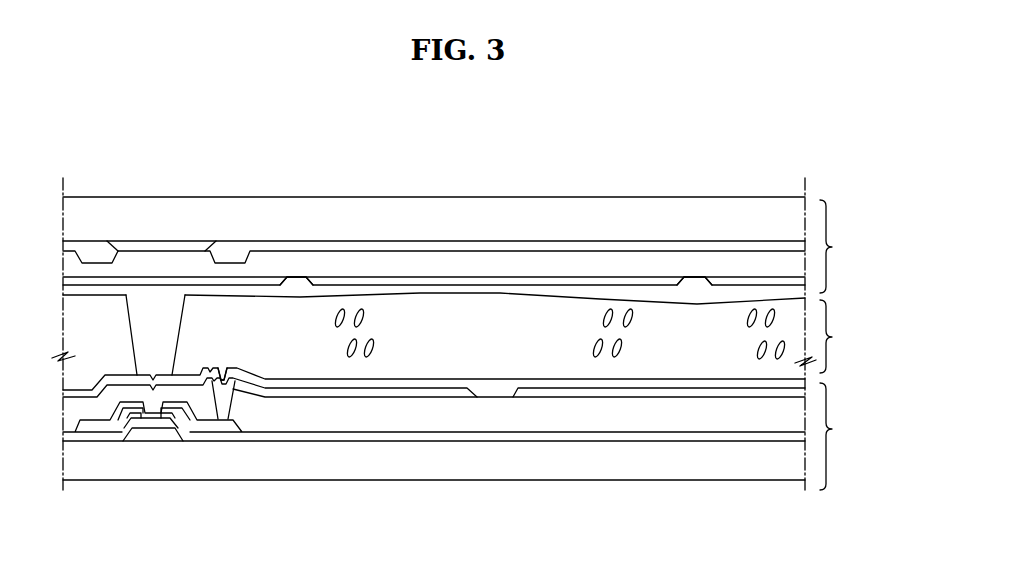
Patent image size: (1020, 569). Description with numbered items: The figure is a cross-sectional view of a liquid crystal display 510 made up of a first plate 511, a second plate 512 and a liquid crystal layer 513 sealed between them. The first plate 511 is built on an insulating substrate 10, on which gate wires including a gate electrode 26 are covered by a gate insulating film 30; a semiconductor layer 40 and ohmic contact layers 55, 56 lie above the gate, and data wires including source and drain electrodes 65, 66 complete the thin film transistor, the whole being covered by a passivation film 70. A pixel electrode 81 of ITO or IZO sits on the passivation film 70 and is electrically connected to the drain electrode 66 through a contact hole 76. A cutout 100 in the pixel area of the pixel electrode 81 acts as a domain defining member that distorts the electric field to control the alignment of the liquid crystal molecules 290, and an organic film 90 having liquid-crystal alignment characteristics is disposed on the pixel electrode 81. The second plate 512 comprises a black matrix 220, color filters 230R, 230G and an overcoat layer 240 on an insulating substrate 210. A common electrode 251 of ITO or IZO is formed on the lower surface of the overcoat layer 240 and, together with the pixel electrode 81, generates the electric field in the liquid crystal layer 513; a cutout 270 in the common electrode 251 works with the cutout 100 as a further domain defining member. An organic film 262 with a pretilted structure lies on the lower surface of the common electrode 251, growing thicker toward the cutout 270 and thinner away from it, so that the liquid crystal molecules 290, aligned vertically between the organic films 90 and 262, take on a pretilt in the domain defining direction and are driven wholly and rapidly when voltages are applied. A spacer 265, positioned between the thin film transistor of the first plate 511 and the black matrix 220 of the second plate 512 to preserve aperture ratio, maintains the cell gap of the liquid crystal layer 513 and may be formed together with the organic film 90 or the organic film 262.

The insulating substrate 10 is at (410, 466).
The gate electrode 26 is at (150, 432).
The gate insulating film 30 is at (466, 438).
The semiconductor layer 40 is at (160, 432).
The ohmic contact layer 55 is at (135, 431).
The ohmic contact layer 56 is at (173, 432).
The source electrode 65 is at (137, 431).
The drain electrode 66 is at (193, 432).
The passivation film 70 is at (700, 418).
The contact hole 76 is at (231, 382).
The pixel electrode 81 is at (278, 390).
The organic film 90 is at (585, 383).
The cutout 100 is at (509, 367).
The insulating substrate 210 is at (155, 212).
The black matrix 220 is at (218, 249).
The color filter 230G is at (93, 251).
The color filter 230R is at (319, 245).
The overcoat layer 240 is at (420, 263).
The common electrode 251 is at (502, 283).
The organic film 262 is at (557, 294).
The spacer 265 is at (160, 337).
The cutout 270 is at (292, 306).
The liquid crystal molecules 290 is at (607, 310).
The liquid crystal display 510 is at (723, 146).
The first plate 511 is at (841, 436).
The second plate 512 is at (464, 245).
The liquid crystal layer 513 is at (841, 336).